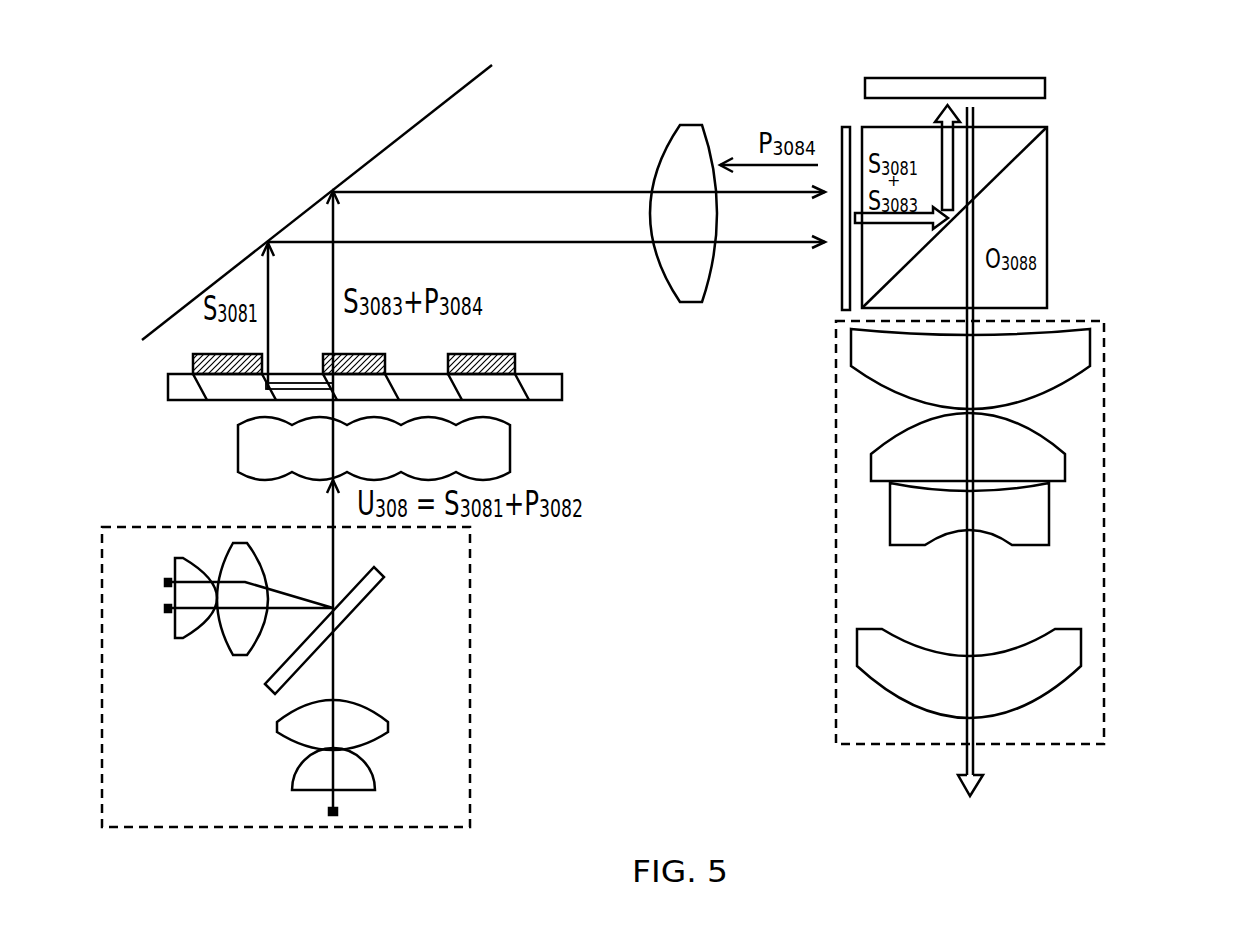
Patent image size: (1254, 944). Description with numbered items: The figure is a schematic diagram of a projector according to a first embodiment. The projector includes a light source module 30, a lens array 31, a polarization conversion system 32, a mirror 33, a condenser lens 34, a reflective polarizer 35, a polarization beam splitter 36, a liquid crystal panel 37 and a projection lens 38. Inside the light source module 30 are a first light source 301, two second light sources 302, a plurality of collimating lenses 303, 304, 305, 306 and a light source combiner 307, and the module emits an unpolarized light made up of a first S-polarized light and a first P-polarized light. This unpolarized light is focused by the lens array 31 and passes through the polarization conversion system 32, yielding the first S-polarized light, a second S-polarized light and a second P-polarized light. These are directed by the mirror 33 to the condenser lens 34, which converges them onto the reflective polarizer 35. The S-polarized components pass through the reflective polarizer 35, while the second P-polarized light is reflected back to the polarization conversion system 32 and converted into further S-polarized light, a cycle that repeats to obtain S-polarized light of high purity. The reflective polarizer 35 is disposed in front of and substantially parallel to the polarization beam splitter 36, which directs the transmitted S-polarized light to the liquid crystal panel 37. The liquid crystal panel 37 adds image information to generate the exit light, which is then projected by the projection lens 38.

The light source module 30 is at (470, 625).
The first light source 301 is at (330, 811).
The second light source 302 is at (166, 582).
The collimating lens 303 is at (376, 777).
The collimating lens 304 is at (178, 640).
The collimating lens 305 is at (389, 723).
The collimating lens 306 is at (238, 657).
The light source combiner 307 is at (347, 602).
The lens array 31 is at (510, 457).
The polarization conversion system 32 is at (562, 385).
The mirror 33 is at (387, 147).
The condenser lens 34 is at (690, 122).
The reflective polarizer 35 is at (853, 127).
The polarization beam splitter 36 is at (1047, 235).
The liquid crystal panel 37 is at (1047, 87).
The projection lens 38 is at (1104, 563).